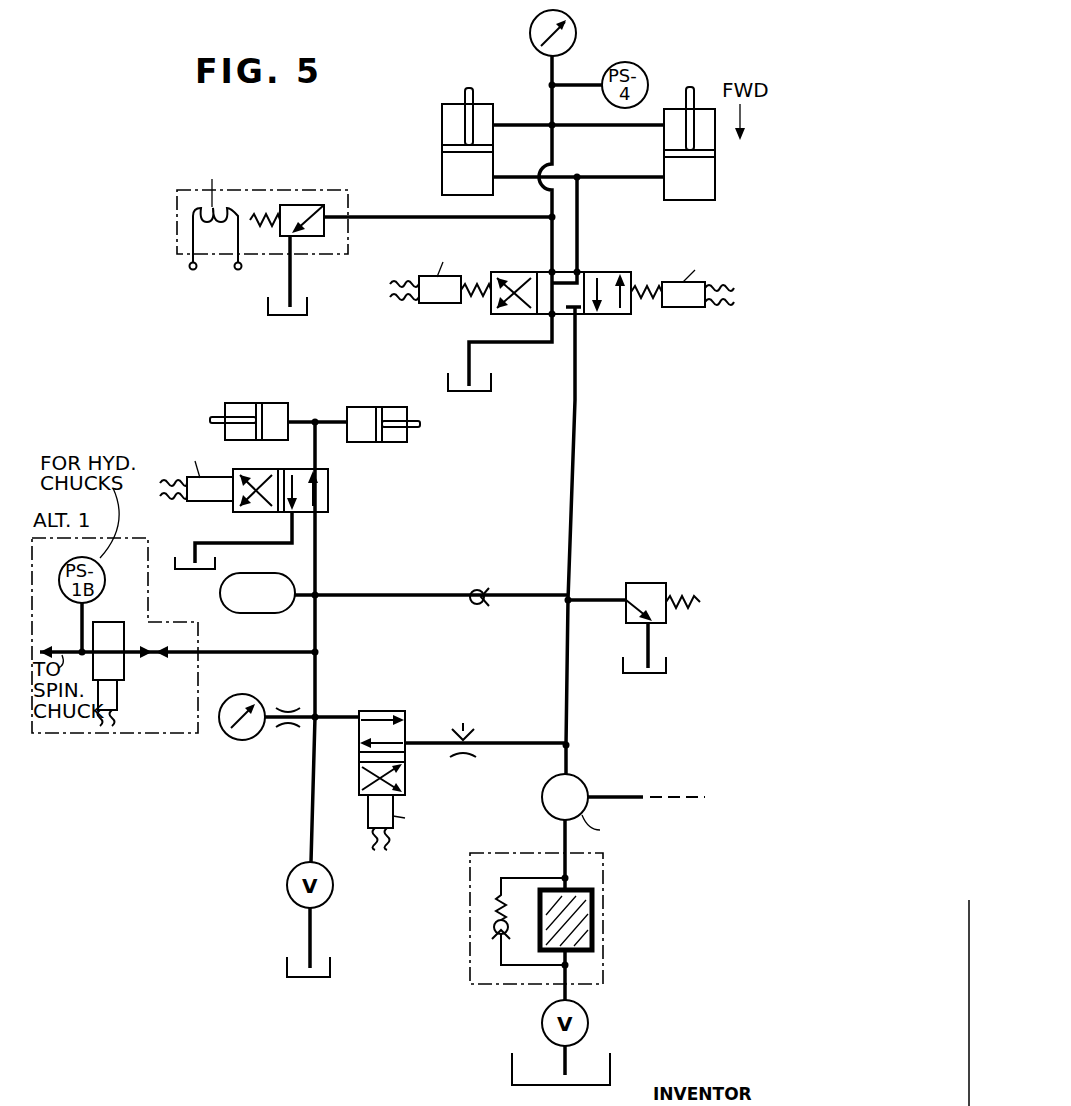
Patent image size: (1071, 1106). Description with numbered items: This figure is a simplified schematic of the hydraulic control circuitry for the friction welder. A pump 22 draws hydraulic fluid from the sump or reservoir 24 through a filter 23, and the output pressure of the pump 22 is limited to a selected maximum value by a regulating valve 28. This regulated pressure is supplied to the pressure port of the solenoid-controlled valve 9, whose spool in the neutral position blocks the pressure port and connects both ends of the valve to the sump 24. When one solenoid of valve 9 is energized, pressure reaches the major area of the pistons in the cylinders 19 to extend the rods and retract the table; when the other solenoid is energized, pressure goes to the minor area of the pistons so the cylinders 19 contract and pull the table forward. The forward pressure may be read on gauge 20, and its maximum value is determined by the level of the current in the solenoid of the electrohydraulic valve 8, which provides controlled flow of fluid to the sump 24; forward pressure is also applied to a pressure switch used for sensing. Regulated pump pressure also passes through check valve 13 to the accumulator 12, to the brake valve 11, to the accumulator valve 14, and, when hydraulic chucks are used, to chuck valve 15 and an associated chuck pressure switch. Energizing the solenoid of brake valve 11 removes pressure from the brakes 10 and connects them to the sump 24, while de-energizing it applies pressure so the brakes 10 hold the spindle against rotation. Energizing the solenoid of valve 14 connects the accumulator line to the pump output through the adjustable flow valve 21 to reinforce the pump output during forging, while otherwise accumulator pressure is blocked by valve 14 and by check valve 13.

The electrohydraulic valve 8 is at (340, 190).
The solenoid-controlled valve 9 is at (631, 314).
The brakes 10 is at (347, 412).
The brake valve 11 is at (328, 490).
The accumulator 12 is at (289, 578).
The check valve 13 is at (483, 590).
The accumulator valve 14 is at (385, 710).
The chuck valve 15 is at (124, 668).
The cylinders 19 is at (442, 171).
The gauge 20 is at (578, 33).
The adjustable flow valve 21 is at (468, 757).
The pump 22 is at (583, 781).
The filter 23 is at (592, 920).
The sump or reservoir 24 is at (307, 312).
The regulating valve 28 is at (652, 583).